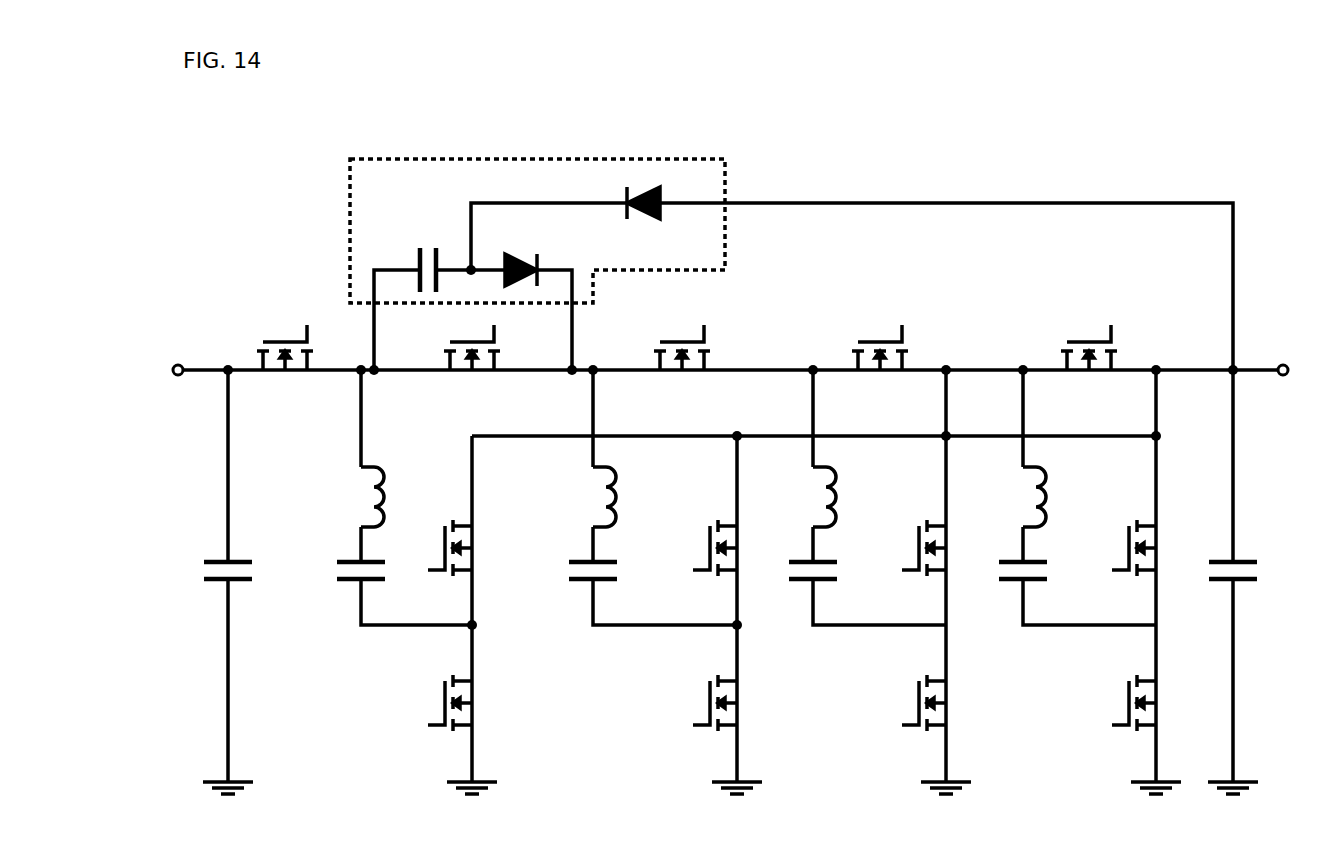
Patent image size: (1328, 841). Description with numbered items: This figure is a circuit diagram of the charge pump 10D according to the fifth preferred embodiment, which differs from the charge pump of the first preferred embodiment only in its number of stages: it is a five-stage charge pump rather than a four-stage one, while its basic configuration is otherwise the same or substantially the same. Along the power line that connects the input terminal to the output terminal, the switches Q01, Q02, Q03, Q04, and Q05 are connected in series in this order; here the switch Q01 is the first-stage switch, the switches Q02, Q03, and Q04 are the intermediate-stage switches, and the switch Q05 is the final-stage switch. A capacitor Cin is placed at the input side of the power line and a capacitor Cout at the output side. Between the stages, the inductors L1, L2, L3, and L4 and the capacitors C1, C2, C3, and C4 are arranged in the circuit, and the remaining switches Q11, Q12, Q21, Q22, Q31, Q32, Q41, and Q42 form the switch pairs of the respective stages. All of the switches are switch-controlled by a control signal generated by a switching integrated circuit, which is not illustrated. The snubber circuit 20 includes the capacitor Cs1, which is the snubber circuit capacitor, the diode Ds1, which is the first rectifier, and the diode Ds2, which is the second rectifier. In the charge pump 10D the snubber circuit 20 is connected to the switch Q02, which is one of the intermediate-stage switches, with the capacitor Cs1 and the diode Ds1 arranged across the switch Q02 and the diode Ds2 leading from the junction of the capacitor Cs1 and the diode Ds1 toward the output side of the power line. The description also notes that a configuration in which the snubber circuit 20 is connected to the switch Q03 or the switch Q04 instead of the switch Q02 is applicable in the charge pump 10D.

The charge pump 10D is at (237, 163).
The snubber circuit 20 is at (725, 178).
The capacitor Cin is at (240, 582).
The capacitor Cout is at (1248, 582).
The switch Q01 is at (272, 346).
The switch Q02 is at (459, 346).
The switch Q03 is at (670, 346).
The switch Q04 is at (867, 346).
The switch Q05 is at (1077, 346).
The switch Q11 is at (446, 530).
The switch Q12 is at (447, 709).
The switch Q21 is at (711, 530).
The switch Q22 is at (713, 709).
The switch Q31 is at (920, 497).
The switch Q32 is at (922, 709).
The switch Q41 is at (1129, 497).
The switch Q42 is at (1131, 709).
The inductor L1 is at (383, 466).
The inductor L2 is at (619, 466).
The inductor L3 is at (835, 466).
The inductor L4 is at (1045, 466).
The capacitor C1 is at (400, 593).
The capacitor C2 is at (648, 593).
The capacitor C3 is at (863, 593).
The capacitor C4 is at (1073, 593).
The capacitor Cs1 is at (427, 257).
The diode Ds1 is at (525, 257).
The diode Ds2 is at (653, 221).